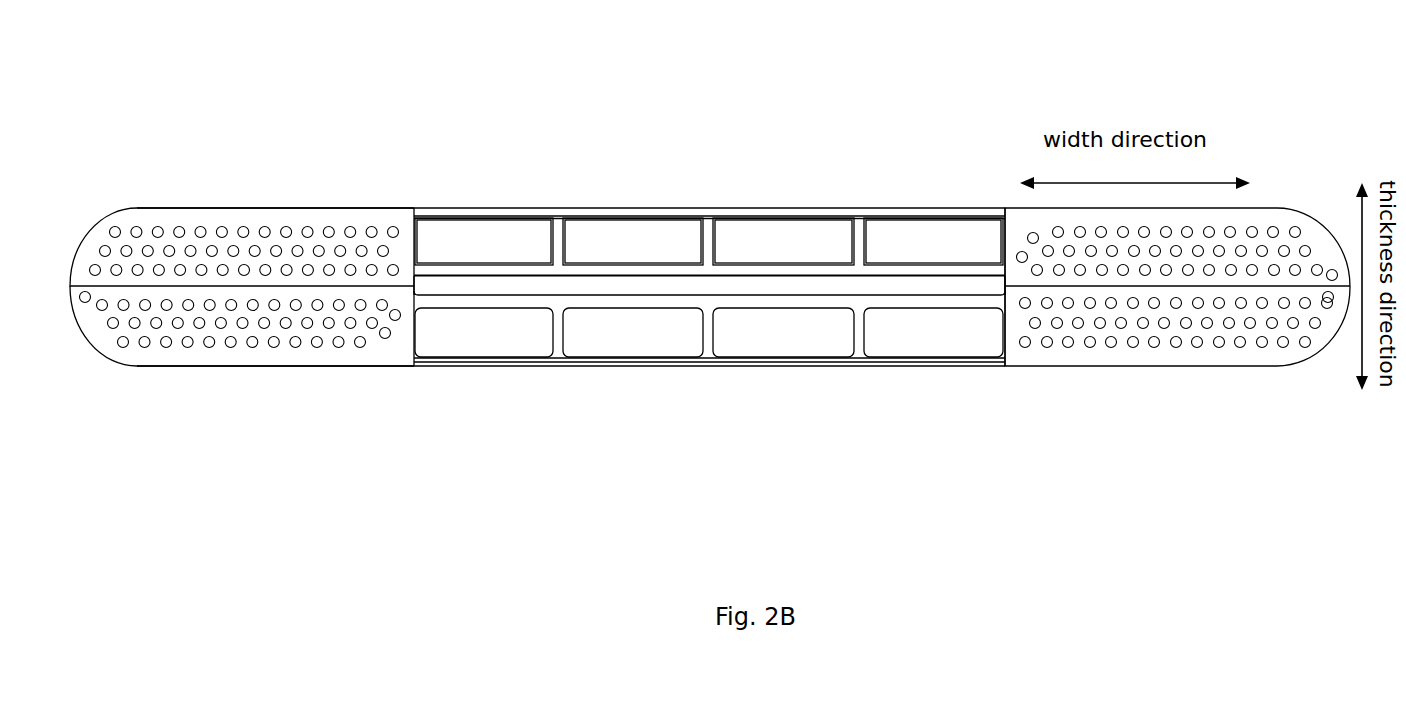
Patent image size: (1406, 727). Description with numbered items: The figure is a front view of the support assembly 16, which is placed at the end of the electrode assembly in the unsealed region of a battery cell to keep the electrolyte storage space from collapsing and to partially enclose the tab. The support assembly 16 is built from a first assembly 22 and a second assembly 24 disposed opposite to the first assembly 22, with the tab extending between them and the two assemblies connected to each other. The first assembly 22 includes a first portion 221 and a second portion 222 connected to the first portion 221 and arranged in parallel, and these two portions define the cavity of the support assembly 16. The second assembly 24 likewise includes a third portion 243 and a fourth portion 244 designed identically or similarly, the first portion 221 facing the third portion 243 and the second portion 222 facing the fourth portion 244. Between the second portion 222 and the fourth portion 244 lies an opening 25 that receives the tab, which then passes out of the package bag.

The support assembly 16 is at (710, 271).
The first assembly 22 is at (232, 247).
The first portion 221 is at (363, 205).
The second portion 222 is at (532, 275).
The second assembly 24 is at (222, 323).
The third portion 243 is at (363, 363).
The fourth portion 244 is at (532, 295).
The opening 25 is at (677, 288).